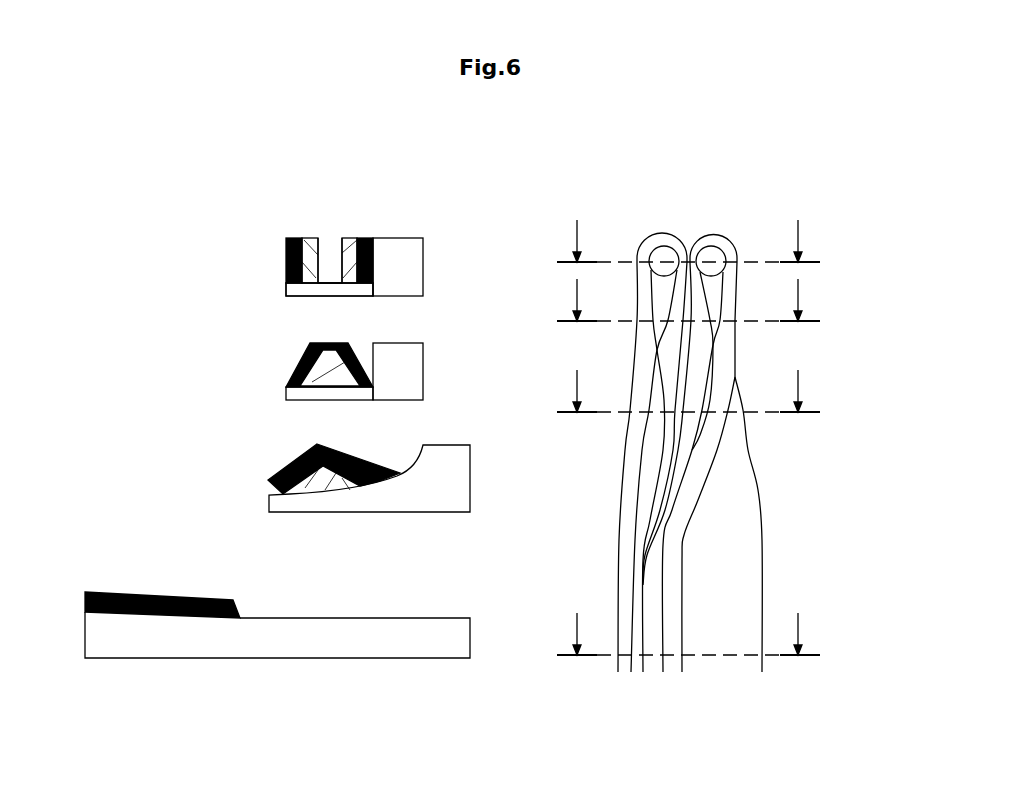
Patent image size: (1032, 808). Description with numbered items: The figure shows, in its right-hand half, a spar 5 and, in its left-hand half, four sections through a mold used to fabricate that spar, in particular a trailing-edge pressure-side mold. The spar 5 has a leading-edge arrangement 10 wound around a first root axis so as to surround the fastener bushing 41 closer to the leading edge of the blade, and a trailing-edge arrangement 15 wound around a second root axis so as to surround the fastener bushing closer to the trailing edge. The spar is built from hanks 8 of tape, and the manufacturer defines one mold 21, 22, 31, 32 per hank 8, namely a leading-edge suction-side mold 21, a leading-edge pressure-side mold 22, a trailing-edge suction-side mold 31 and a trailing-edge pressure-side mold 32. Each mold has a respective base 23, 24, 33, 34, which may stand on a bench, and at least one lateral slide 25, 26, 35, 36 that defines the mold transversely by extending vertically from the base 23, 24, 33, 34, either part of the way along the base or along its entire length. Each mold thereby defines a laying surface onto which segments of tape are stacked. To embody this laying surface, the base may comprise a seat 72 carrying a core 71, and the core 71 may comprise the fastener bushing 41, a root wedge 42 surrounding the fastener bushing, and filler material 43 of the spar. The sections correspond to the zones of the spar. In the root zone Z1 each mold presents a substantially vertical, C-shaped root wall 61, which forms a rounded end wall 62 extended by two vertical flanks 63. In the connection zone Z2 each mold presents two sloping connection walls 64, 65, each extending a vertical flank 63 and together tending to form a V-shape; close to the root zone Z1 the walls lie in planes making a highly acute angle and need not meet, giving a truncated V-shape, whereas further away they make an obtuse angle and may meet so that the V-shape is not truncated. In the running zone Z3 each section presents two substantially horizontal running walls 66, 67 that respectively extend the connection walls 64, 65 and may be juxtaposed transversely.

The spar 5 is at (731, 387).
The hank 8 is at (464, 413).
The leading-edge arrangement 10 is at (657, 215).
The trailing-edge arrangement 15 is at (719, 215).
The leading-edge suction-side mold 21 is at (464, 413).
The leading-edge pressure-side mold 22 is at (464, 413).
The base 23 is at (302, 492).
The base 24 is at (302, 492).
The lateral slide 25 is at (440, 371).
The lateral slide 26 is at (440, 371).
The trailing-edge suction-side mold 31 is at (464, 413).
The trailing-edge pressure-side mold 32 is at (464, 413).
The base 33 is at (302, 492).
The base 34 is at (335, 290).
The lateral slide 35 is at (440, 371).
The lateral slide 36 is at (413, 255).
The fastener bushing 41 is at (328, 223).
The root wedge 42 is at (348, 243).
The filler material 43 is at (310, 449).
The root wall 61 is at (298, 237).
The rounded end wall 62 is at (341, 223).
The vertical flank 63 is at (357, 242).
The connection wall 64 is at (310, 459).
The connection wall 65 is at (300, 372).
The running wall 66 is at (162, 657).
The running wall 67 is at (120, 613).
The core 71 is at (310, 245).
The seat 72 is at (292, 290).
The root zone Z1 is at (180, 246).
The connection zone Z2 is at (180, 352).
The running zone Z3 is at (50, 640).